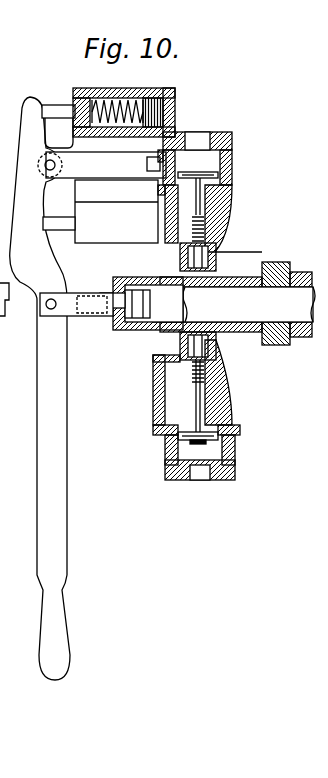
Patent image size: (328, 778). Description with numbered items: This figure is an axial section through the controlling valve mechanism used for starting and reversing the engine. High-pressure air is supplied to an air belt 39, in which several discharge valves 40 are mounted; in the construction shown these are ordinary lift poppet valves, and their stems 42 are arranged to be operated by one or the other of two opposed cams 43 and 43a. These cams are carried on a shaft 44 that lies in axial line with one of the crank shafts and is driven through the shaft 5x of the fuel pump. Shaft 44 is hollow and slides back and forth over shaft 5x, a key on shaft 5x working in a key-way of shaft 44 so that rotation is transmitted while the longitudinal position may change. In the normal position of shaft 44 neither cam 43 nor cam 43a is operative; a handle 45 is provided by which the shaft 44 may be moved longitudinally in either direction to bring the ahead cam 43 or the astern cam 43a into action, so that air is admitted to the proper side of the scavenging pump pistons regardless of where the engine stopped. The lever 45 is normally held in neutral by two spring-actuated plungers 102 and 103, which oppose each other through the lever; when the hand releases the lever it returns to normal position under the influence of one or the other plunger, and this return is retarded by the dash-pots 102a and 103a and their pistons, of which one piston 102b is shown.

The spring-actuated plunger 102 is at (56, 104).
The dash-pot 102a is at (152, 98).
The dash-pot piston 102b is at (98, 98).
The spring-actuated plunger 103 is at (58, 228).
The dash-pot 103a is at (116, 211).
The discharge valve 40 is at (212, 170).
The valve stem 42 is at (195, 208).
The ahead cam 43 is at (166, 345).
The astern cam 43a is at (255, 346).
The shaft 44 is at (112, 335).
The handle 45 is at (50, 460).
The fuel pump shaft 5x is at (234, 304).
The air belt 39 is at (160, 450).